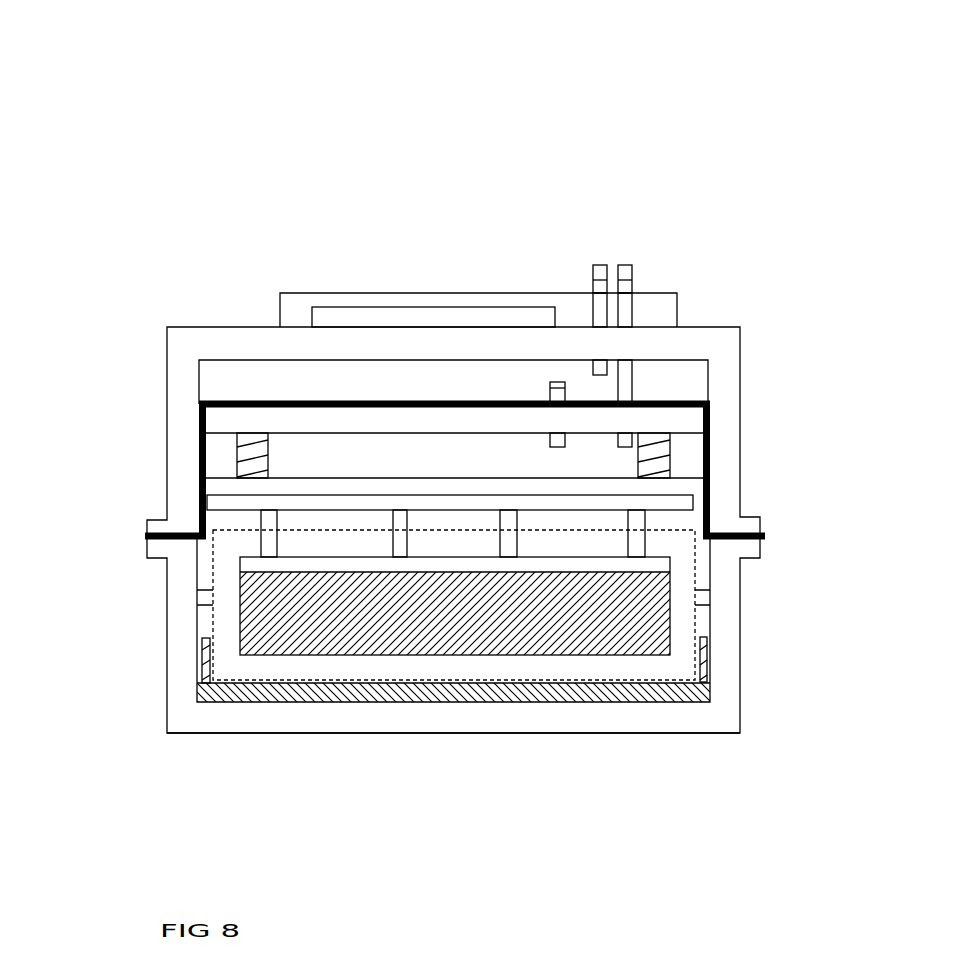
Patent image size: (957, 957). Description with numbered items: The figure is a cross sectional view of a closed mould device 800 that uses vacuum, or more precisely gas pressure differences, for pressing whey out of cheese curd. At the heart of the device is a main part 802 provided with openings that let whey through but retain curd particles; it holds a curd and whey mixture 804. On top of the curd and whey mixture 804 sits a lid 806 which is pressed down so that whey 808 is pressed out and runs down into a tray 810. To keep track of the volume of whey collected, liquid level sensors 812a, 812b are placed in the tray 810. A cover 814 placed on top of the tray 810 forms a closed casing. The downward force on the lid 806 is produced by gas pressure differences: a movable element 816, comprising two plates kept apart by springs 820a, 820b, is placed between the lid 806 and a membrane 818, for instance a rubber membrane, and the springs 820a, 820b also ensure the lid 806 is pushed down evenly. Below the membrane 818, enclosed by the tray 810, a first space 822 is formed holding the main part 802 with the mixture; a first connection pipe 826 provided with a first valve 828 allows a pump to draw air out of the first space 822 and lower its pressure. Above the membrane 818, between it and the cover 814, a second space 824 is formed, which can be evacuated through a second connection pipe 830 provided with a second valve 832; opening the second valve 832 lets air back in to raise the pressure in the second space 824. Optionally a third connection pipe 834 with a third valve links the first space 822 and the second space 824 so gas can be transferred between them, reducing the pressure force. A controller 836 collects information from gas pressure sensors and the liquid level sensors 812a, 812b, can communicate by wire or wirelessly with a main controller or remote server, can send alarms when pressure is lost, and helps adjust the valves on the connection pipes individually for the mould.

The device 800 is at (258, 110).
The main part 802 is at (228, 567).
The curd and whey mixture 804 is at (275, 629).
The lid 806 is at (222, 506).
The whey 808 is at (277, 690).
The tray 810 is at (353, 712).
The liquid level sensor 812a is at (205, 662).
The liquid level sensor 812b is at (707, 652).
The cover 814 is at (182, 390).
The movable element 816 is at (695, 422).
The membrane 818 is at (695, 500).
The spring 820a is at (245, 457).
The spring 820b is at (665, 457).
The first space 822 is at (325, 458).
The second space 824 is at (680, 372).
The first connection pipe 826 is at (625, 312).
The first valve 828 is at (632, 275).
The second connection pipe 830 is at (600, 317).
The second valve 832 is at (597, 275).
The third connection pipe 834 is at (557, 393).
The controller 836 is at (417, 312).